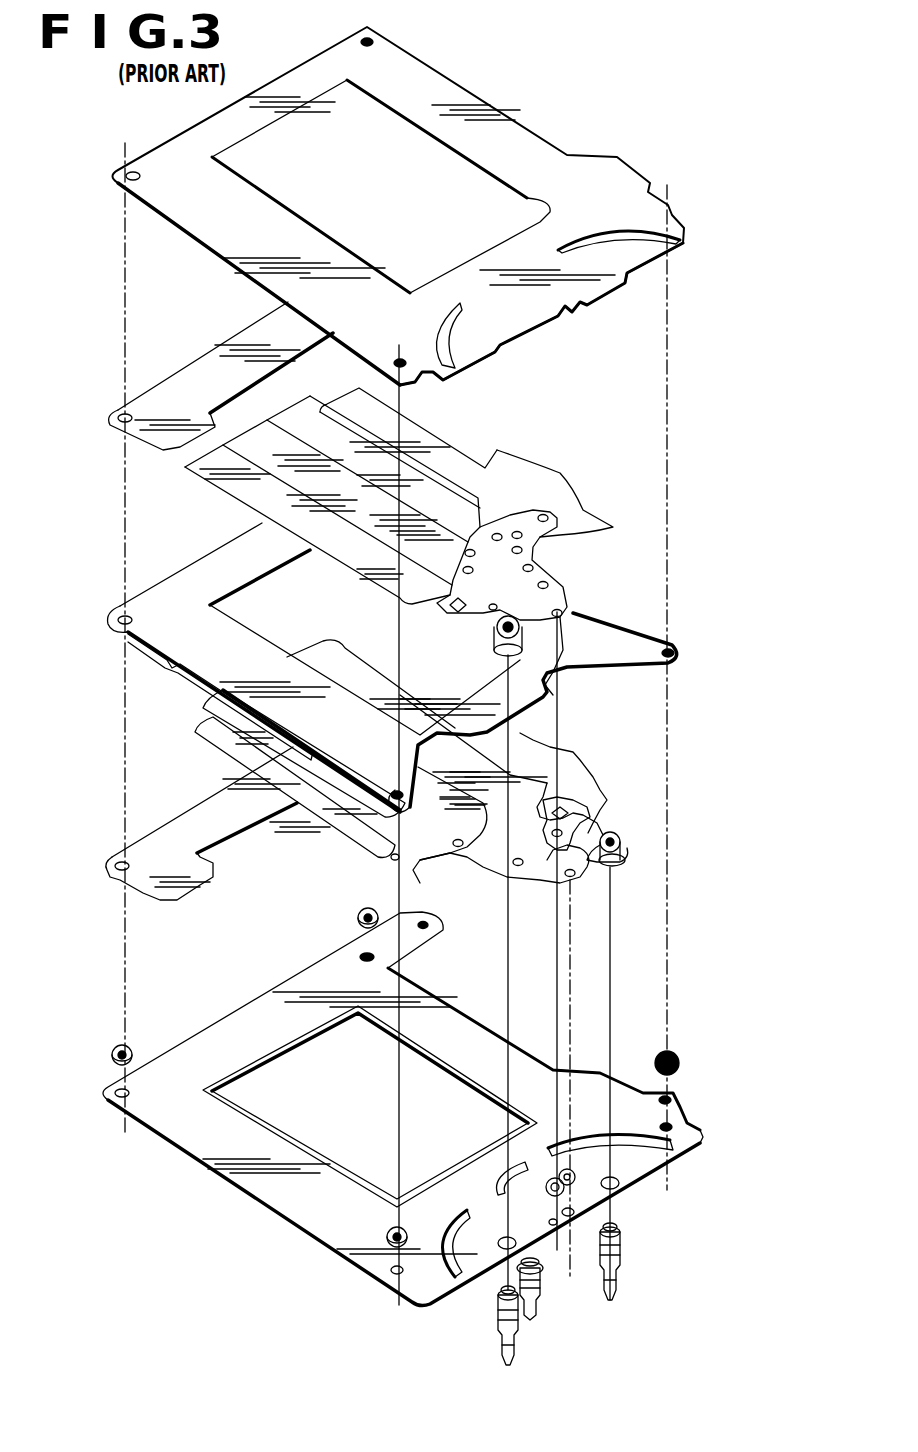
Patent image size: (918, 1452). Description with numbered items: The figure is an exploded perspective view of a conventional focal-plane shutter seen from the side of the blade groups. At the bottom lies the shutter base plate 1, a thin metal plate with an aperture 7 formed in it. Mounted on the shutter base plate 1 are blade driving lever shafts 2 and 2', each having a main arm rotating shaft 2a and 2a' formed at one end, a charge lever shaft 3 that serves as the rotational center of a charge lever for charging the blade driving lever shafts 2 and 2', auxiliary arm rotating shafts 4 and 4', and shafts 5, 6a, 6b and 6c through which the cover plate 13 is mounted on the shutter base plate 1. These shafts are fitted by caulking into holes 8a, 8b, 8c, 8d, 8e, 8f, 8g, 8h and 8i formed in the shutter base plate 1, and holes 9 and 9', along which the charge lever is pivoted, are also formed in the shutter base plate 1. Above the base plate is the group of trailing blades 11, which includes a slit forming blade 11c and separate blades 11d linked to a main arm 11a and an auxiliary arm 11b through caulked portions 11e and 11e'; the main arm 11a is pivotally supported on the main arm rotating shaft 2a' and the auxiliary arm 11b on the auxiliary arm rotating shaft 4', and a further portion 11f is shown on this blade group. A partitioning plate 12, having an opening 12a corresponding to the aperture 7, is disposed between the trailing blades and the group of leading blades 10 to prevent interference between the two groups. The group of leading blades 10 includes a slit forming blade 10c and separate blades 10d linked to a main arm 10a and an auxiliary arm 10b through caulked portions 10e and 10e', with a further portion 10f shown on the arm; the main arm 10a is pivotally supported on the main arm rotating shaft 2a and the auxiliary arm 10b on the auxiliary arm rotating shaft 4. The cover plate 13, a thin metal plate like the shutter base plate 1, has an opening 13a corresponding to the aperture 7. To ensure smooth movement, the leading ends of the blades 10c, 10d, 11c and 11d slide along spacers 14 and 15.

The shutter base plate 1 is at (285, 1203).
The blade driving lever shaft 2 is at (526, 1338).
The blade driving lever shaft 2' is at (632, 1275).
The main arm rotating shaft 2a is at (478, 1320).
The main arm rotating shaft 2a' is at (649, 1247).
The charge lever shaft 3 is at (527, 1300).
The auxiliary arm rotating shaft 4 is at (592, 1203).
The auxiliary arm rotating shaft 4' is at (609, 1121).
The shaft 5 is at (680, 1063).
The shaft 6a is at (380, 1250).
The shaft 6b is at (103, 1067).
The shaft 6c is at (357, 928).
The aperture 7 is at (368, 1183).
The hole 8a is at (500, 1240).
The hole 8b is at (617, 1190).
The hole 8c is at (503, 1173).
The hole 8d is at (558, 1247).
The hole 8e is at (582, 1240).
The hole 8f is at (670, 1133).
The hole 8g is at (395, 1277).
The hole 8h is at (103, 1100).
The hole 8i is at (357, 958).
The hole 9 is at (438, 1281).
The hole 9' is at (610, 1092).
The group of leading blades 10 is at (595, 476).
The main arm 10a is at (463, 613).
The auxiliary arm 10b is at (545, 550).
The slit forming blade 10c is at (453, 470).
The separate blades 10d is at (363, 488).
The caulked portion 10e is at (485, 642).
The caulked portion 10e' is at (582, 580).
The tab 10f is at (557, 673).
The group of trailing blades 11 is at (605, 756).
The main arm 11a is at (590, 830).
The auxiliary arm 11b is at (557, 883).
The slit forming blade 11c is at (317, 800).
The separate blades 11d is at (447, 860).
The caulked portion 11e is at (527, 899).
The caulked portion 11e' is at (359, 876).
The screw 11f is at (623, 870).
The partitioning plate 12 is at (643, 637).
The opening 12a is at (232, 638).
The cover plate 13 is at (588, 170).
The opening 13a is at (283, 125).
The spacer 14 is at (167, 397).
The spacer 15 is at (155, 855).